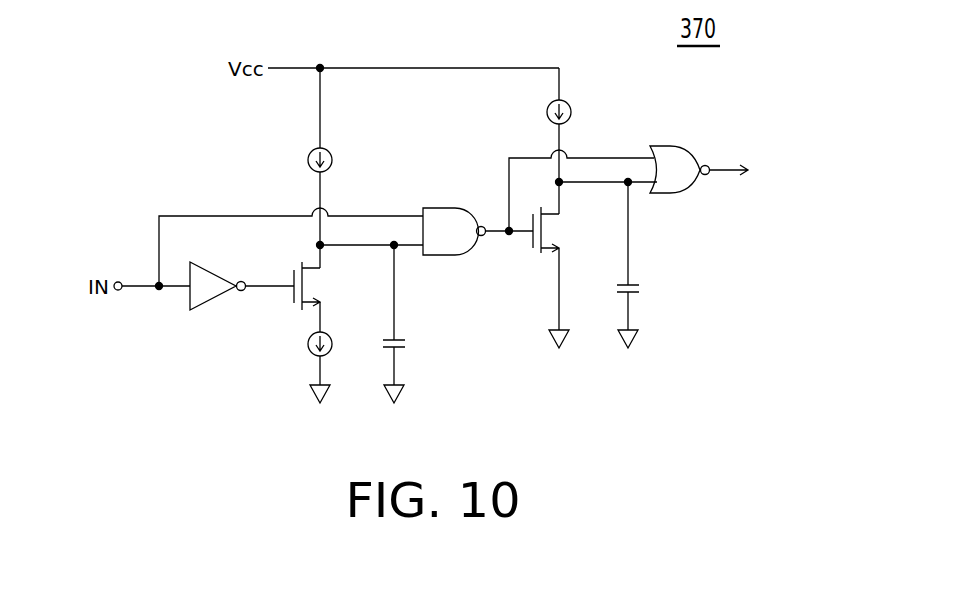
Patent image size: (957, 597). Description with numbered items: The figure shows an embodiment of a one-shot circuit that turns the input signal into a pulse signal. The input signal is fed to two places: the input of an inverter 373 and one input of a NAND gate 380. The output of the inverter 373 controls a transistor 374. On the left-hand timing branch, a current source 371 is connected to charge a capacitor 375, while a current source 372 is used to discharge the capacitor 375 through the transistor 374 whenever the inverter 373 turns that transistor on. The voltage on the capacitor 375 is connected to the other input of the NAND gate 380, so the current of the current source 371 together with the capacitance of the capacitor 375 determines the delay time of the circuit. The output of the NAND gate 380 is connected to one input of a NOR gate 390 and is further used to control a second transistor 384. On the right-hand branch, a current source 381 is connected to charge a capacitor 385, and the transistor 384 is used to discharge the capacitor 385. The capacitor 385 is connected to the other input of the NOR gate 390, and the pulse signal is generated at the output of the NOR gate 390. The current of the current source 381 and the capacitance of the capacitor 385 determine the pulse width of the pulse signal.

The current source 371 is at (307, 162).
The current source 372 is at (308, 348).
The inverter 373 is at (218, 298).
The transistor 374 is at (306, 285).
The capacitor 375 is at (405, 342).
The NAND gate 380 is at (438, 207).
The current source 381 is at (547, 116).
The transistor 384 is at (548, 230).
The capacitor 385 is at (640, 286).
The NOR gate 390 is at (691, 194).